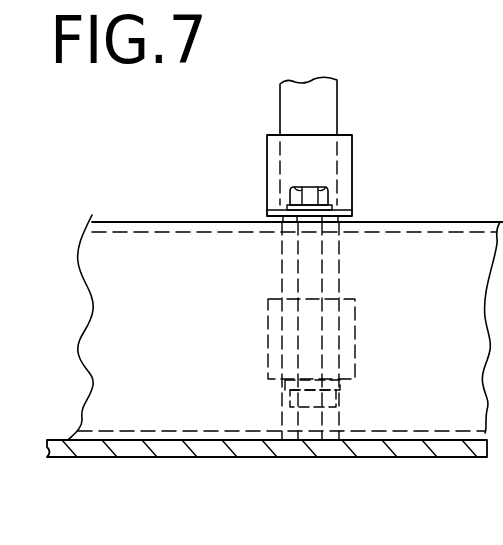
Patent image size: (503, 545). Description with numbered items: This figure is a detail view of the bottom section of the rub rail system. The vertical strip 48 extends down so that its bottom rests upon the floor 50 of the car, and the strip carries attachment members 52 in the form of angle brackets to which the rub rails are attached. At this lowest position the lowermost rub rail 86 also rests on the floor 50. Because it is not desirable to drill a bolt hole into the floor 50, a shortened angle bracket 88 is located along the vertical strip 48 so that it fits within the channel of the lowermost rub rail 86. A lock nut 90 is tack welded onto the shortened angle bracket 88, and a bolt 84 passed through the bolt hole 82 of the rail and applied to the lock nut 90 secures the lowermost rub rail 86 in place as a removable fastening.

The vertical strip 48 is at (322, 103).
The attachment member 52 is at (275, 173).
The lowermost rub rail 86 is at (150, 277).
The bolt hole 82 is at (308, 230).
The bolt 84 is at (310, 278).
The shortened angle bracket 88 is at (351, 340).
The lock nut 90 is at (336, 393).
The floor 50 is at (120, 457).